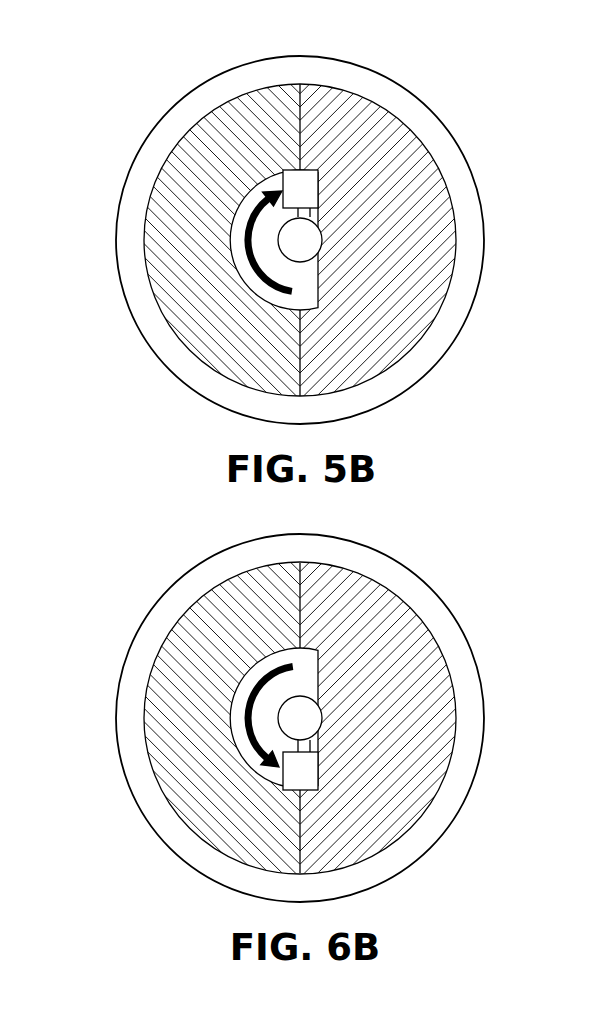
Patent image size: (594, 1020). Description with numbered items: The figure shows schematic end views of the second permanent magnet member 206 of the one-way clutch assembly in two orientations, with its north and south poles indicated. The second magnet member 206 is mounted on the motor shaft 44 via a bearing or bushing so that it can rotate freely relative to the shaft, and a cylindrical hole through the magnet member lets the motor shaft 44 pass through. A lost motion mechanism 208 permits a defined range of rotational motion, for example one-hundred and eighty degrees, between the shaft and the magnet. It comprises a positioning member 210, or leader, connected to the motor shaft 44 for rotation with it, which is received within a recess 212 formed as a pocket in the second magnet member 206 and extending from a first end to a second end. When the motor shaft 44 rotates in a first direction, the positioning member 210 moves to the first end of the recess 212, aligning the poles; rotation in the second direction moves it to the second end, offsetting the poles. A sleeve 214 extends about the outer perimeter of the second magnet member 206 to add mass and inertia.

In FIG. 5B, the motor shaft 44 is at (310, 254).
In FIG. 6B, the motor shaft 44 is at (310, 732).
In FIG. 5B, the second permanent magnet member 206 is at (427, 290).
In FIG. 6B, the second permanent magnet member 206 is at (400, 806).
In FIG. 5B, the lost motion mechanism 208 is at (323, 217).
In FIG. 5B, the positioning member 210 is at (295, 180).
In FIG. 6B, the positioning member 210 is at (305, 768).
In FIG. 5B, the recess 212 is at (232, 228).
In FIG. 6B, the recess 212 is at (247, 755).
In FIG. 5B, the sleeve 214 is at (423, 380).